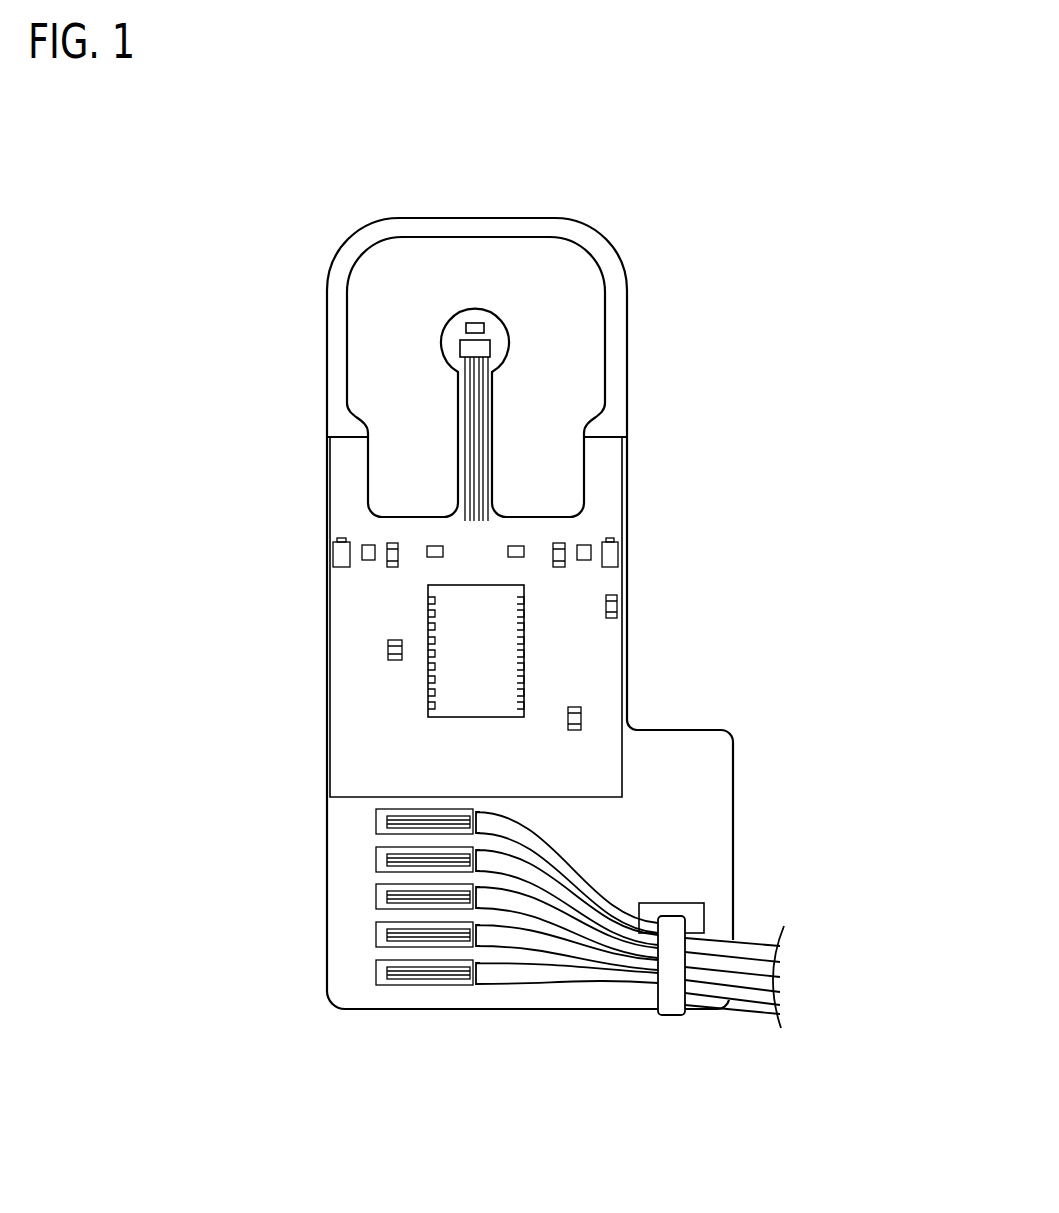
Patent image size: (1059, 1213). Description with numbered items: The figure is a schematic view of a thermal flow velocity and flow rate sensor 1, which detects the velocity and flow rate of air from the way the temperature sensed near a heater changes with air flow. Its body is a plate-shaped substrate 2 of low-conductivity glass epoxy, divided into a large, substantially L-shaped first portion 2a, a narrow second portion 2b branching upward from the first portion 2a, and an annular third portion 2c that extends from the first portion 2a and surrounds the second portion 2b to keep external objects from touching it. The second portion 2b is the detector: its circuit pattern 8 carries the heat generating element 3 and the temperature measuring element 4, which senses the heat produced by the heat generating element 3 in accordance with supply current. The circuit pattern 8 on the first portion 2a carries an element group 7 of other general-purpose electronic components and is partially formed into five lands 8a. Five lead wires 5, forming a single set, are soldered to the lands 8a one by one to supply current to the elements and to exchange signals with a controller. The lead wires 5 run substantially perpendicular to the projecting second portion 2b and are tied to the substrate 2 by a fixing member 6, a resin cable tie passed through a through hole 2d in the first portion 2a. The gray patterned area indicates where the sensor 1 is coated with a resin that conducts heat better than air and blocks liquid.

The flow velocity and flow rate sensor 1 is at (290, 230).
The substrate 2 is at (678, 730).
The first portion 2a is at (345, 828).
The second portion 2b is at (460, 430).
The third portion 2c is at (617, 351).
The through hole 2d is at (690, 902).
The heat generating element 3 is at (480, 328).
The temperature measuring element 4 is at (490, 350).
The lead wire 5 is at (753, 950).
The fixing member 6 is at (672, 1003).
The element group 7 is at (578, 640).
The circuit pattern 8 is at (360, 740).
The land 8a is at (382, 980).